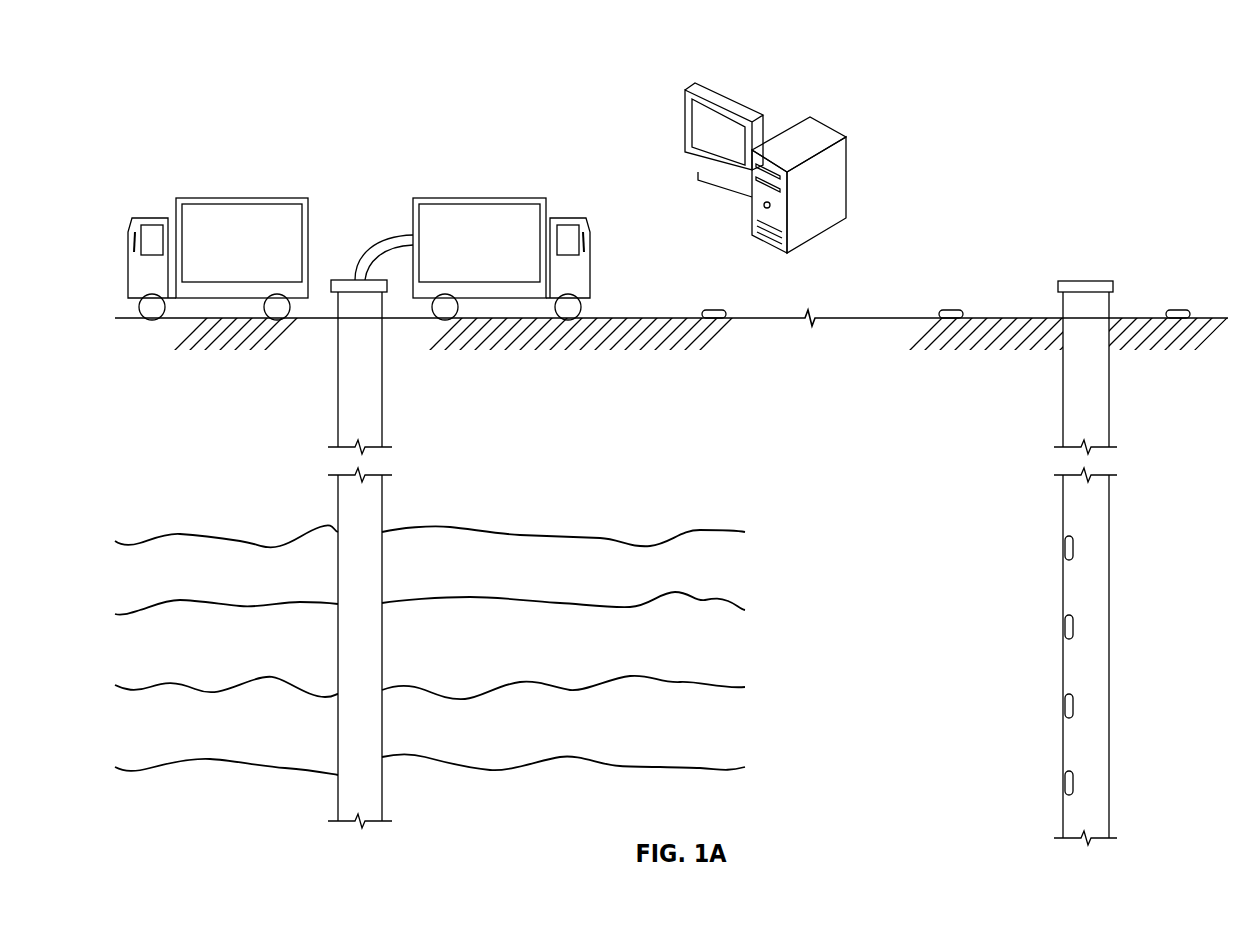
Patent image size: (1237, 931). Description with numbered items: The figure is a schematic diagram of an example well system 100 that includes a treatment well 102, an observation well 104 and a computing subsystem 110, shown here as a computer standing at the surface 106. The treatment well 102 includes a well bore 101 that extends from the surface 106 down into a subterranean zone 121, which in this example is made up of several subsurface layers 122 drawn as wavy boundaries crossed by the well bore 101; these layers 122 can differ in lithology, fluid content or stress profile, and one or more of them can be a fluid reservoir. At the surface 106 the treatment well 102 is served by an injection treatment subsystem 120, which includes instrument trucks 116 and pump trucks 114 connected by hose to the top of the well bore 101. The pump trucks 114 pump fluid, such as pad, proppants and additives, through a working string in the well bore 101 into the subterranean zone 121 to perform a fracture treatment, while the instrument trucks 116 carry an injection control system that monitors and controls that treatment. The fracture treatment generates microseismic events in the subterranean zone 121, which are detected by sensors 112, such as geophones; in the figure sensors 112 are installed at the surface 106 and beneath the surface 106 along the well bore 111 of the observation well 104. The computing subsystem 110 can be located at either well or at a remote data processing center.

The well system 100 is at (197, 89).
The treatment well 102 is at (306, 127).
The injection treatment subsystem 120 is at (378, 144).
The instrument trucks 116 is at (222, 254).
The pump trucks 114 is at (460, 254).
The computing subsystem 110 is at (830, 125).
The surface 106 is at (866, 317).
The observation well 104 is at (1090, 169).
The well bore 101 is at (354, 409).
The well bore 111 is at (1088, 411).
The sensors 112 is at (713, 311).
The subterranean zone 121 is at (758, 479).
The subsurface layers 122 is at (527, 581).